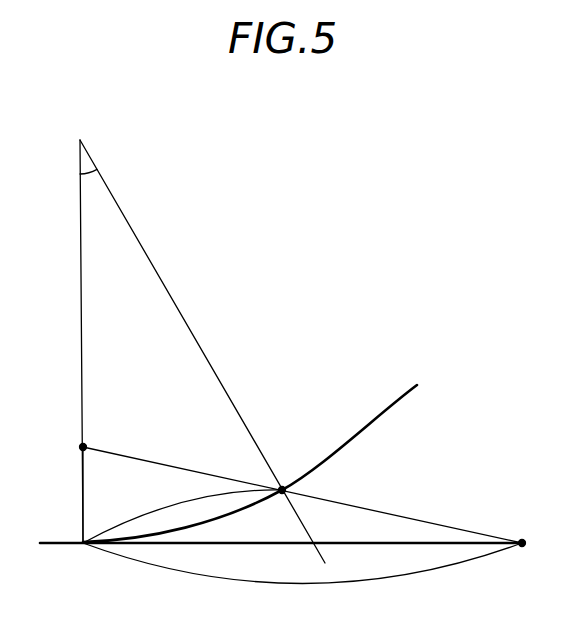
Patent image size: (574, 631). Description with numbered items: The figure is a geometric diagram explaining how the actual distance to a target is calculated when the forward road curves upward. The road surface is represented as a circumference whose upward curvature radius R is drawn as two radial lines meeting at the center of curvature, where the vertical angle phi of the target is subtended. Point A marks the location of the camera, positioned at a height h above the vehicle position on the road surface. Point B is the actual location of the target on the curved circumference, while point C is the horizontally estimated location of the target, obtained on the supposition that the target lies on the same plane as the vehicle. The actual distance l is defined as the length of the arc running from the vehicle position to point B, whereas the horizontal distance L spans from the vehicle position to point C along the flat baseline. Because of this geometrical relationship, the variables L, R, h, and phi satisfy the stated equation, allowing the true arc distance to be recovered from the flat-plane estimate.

The upward curvature radius R is at (191, 351).
The vertical angle phi is at (97, 181).
The height of camera center h is at (70, 495).
The camera location A is at (72, 443).
The actual target location B is at (285, 474).
The horizontally estimated target location C is at (523, 528).
The actual distance l is at (182, 516).
The horizontally estimated distance L is at (302, 571).